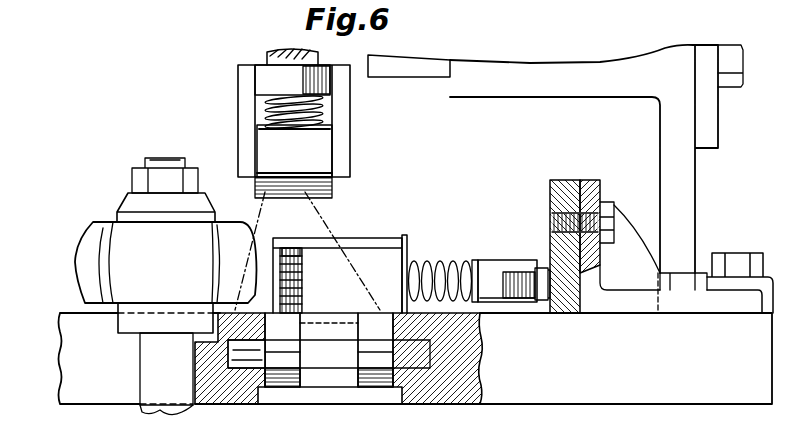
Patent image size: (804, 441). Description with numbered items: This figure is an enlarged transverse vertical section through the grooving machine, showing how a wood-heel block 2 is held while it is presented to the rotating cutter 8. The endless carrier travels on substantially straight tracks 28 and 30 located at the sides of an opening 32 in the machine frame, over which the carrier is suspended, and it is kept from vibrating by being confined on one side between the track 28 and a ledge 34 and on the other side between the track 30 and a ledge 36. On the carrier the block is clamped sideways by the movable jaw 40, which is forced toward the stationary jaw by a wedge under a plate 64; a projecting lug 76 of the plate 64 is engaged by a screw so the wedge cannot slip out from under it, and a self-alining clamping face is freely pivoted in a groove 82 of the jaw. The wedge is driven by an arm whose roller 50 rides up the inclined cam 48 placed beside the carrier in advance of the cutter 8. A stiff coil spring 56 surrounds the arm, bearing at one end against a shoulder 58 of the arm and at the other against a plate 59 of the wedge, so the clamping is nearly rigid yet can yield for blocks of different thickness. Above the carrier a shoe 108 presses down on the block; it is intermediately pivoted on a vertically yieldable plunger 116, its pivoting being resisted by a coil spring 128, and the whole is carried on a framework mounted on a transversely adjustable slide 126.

The wood-heel block 2 is at (327, 230).
The rotating cutter 8 is at (121, 236).
The track 28 is at (406, 403).
The track 30 is at (262, 401).
The opening 32 is at (329, 374).
The ledge 34 is at (465, 319).
The ledge 36 is at (252, 308).
The movable jaw 40 is at (414, 247).
The cam 48 is at (552, 198).
The roller 50 is at (530, 284).
The coil spring 56 is at (470, 262).
The shoulder 58 is at (486, 259).
The plate 59 is at (436, 262).
The plate 64 is at (302, 276).
The projecting lug 76 is at (316, 258).
The groove 82 is at (301, 244).
The shoe 108 is at (320, 154).
The plunger 116 is at (260, 57).
The slide 126 is at (455, 60).
The coil spring 128 is at (322, 108).